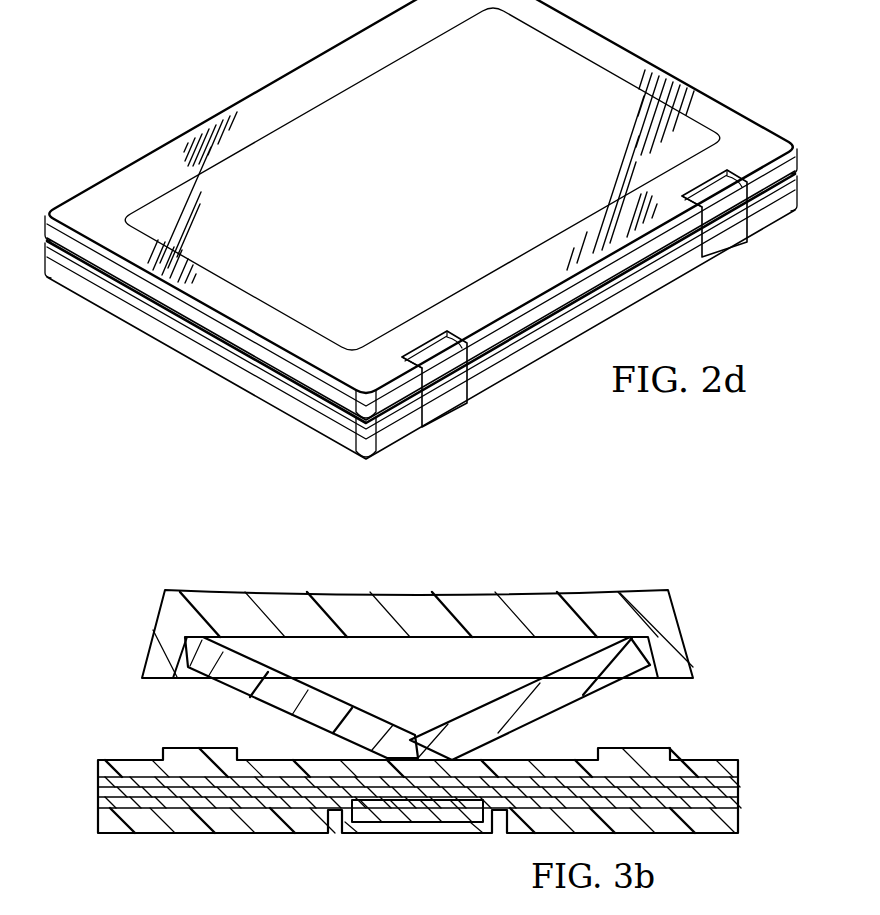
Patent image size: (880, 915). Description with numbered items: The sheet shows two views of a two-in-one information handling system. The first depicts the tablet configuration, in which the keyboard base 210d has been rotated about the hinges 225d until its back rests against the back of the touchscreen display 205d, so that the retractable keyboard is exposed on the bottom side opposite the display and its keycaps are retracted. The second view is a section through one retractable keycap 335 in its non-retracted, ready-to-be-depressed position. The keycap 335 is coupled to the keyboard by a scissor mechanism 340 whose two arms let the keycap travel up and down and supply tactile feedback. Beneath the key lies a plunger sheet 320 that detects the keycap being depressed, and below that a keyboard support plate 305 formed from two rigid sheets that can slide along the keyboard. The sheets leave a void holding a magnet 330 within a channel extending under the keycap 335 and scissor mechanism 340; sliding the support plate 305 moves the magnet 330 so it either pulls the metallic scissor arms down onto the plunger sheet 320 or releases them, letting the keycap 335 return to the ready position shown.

In FIG. 2d, the touchscreen display 205d is at (451, 196).
In FIG. 2d, the keyboard base 210d is at (173, 340).
In FIG. 2d, the hinges 225d is at (437, 400).
In FIG. 3b, the keyboard support plate 305 is at (389, 799).
In FIG. 3b, the plunger sheet 320 is at (130, 768).
In FIG. 3b, the magnet 330 is at (398, 812).
In FIG. 3b, the retractable keycap 335 is at (417, 602).
In FIG. 3b, the scissor mechanism 340 is at (583, 670).